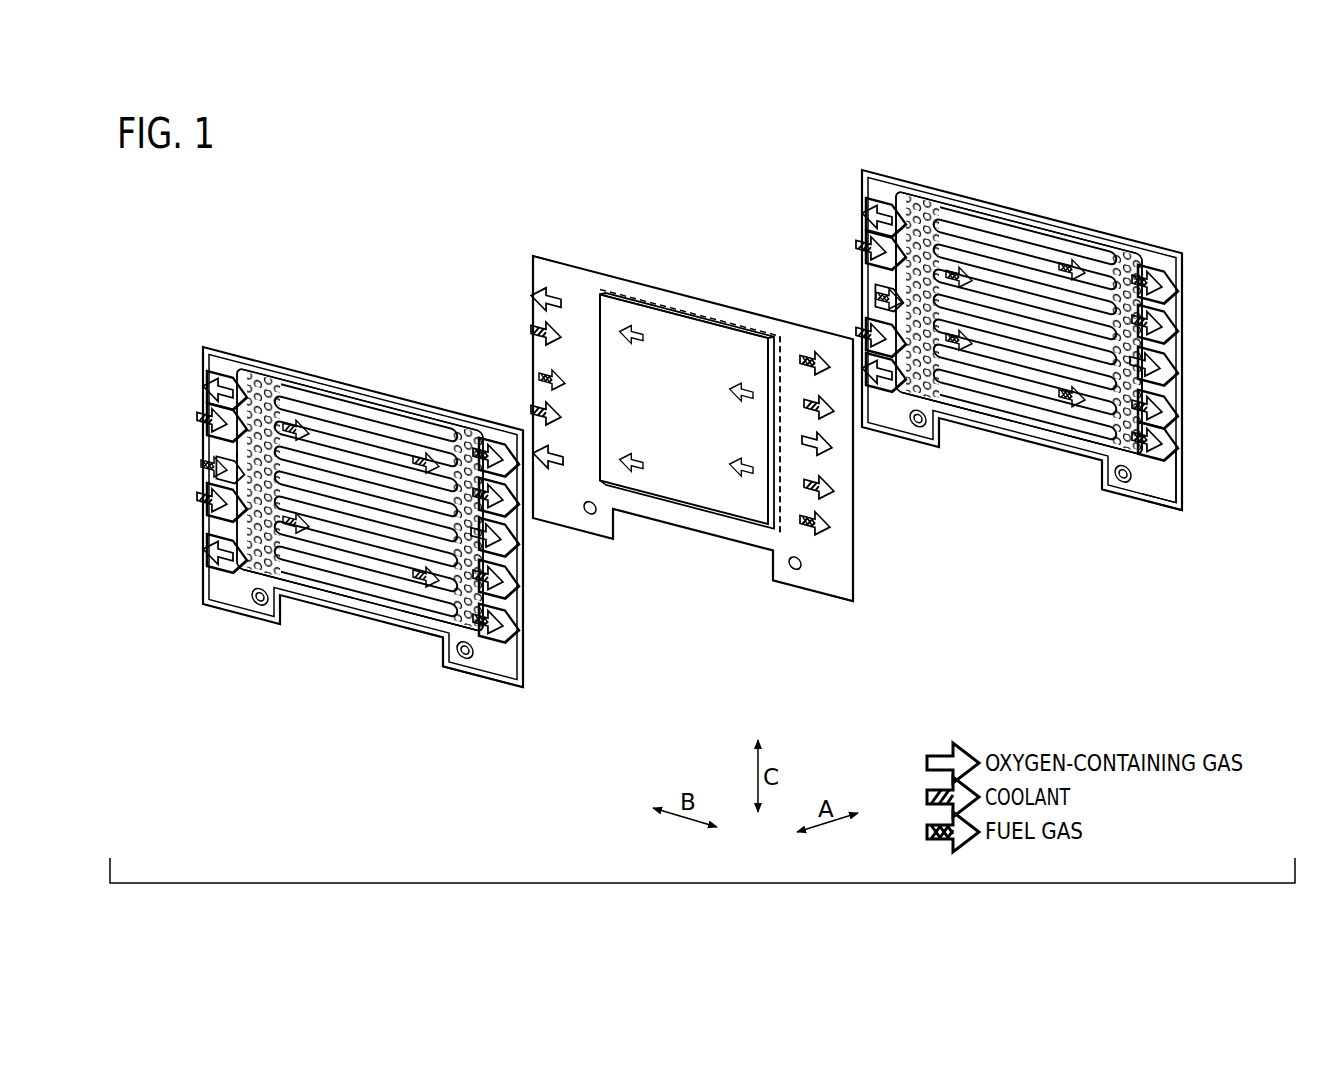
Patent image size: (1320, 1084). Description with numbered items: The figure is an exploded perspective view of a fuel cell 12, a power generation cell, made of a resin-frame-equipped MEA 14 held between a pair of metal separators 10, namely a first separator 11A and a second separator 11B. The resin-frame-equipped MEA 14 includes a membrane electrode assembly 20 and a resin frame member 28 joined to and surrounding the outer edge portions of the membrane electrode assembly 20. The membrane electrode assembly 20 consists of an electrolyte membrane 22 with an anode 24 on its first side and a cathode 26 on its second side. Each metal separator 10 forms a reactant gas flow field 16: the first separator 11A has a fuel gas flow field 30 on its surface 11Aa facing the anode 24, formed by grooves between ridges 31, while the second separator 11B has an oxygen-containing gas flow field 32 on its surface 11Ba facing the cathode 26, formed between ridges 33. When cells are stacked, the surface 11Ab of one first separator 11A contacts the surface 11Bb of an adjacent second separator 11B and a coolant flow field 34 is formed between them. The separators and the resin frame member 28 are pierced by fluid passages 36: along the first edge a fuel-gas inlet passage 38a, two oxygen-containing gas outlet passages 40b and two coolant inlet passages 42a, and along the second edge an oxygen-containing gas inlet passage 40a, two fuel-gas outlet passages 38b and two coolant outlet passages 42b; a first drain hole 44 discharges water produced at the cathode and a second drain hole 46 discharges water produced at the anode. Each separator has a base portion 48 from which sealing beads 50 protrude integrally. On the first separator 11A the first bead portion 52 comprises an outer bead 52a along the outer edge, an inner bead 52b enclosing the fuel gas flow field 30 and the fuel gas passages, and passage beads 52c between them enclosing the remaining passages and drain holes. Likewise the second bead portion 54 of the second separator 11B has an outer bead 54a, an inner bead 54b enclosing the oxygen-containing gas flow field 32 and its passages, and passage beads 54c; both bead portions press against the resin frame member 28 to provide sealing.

The metal separator 10 is at (688, 441).
The first separator 11A is at (858, 195).
The surface of first separator 11Aa is at (1170, 495).
The surface of first separator 11Ab is at (1162, 477).
The second separator 11B is at (203, 345).
The surface of second separator 11Ba is at (510, 690).
The surface of second separator 11Bb is at (490, 665).
The fuel cell 12 is at (303, 224).
The resin-frame-equipped MEA 14 is at (705, 197).
The reactant gas flow field 16 is at (694, 378).
The membrane electrode assembly 20 is at (682, 313).
The electrolyte membrane 22 is at (642, 296).
The anode 24 is at (703, 495).
The cathode 26 is at (682, 488).
The resin frame member 28 is at (600, 285).
The fuel gas flow field 30 is at (1025, 247).
The ridges 31 is at (1067, 250).
The oxygen-containing gas flow field 32 is at (387, 447).
The ridges 33 is at (423, 430).
The coolant flow field 34 is at (343, 435).
The fluid passages 36 is at (220, 567).
The fuel-gas inlet passage 38a is at (878, 286).
The fuel-gas outlet passages 38b is at (1163, 445).
The oxygen-containing gas inlet passage 40a is at (1165, 368).
The oxygen-containing gas outlet passages 40b is at (893, 417).
The coolant inlet passages 42a is at (870, 248).
The coolant outlet passages 42b is at (1162, 415).
The first drain hole 44 is at (925, 422).
The second drain hole 46 is at (1123, 482).
The base portion 48 is at (1147, 487).
The sealing beads 50 is at (689, 455).
The first bead portion 52 is at (1042, 445).
The outer bead 52a is at (1060, 447).
The inner bead 52b is at (1007, 420).
The passage beads 52c is at (900, 337).
The second bead portion 54 is at (382, 620).
The outer bead 54a is at (420, 637).
The inner bead 54b is at (342, 598).
The passage beads 54c is at (525, 627).